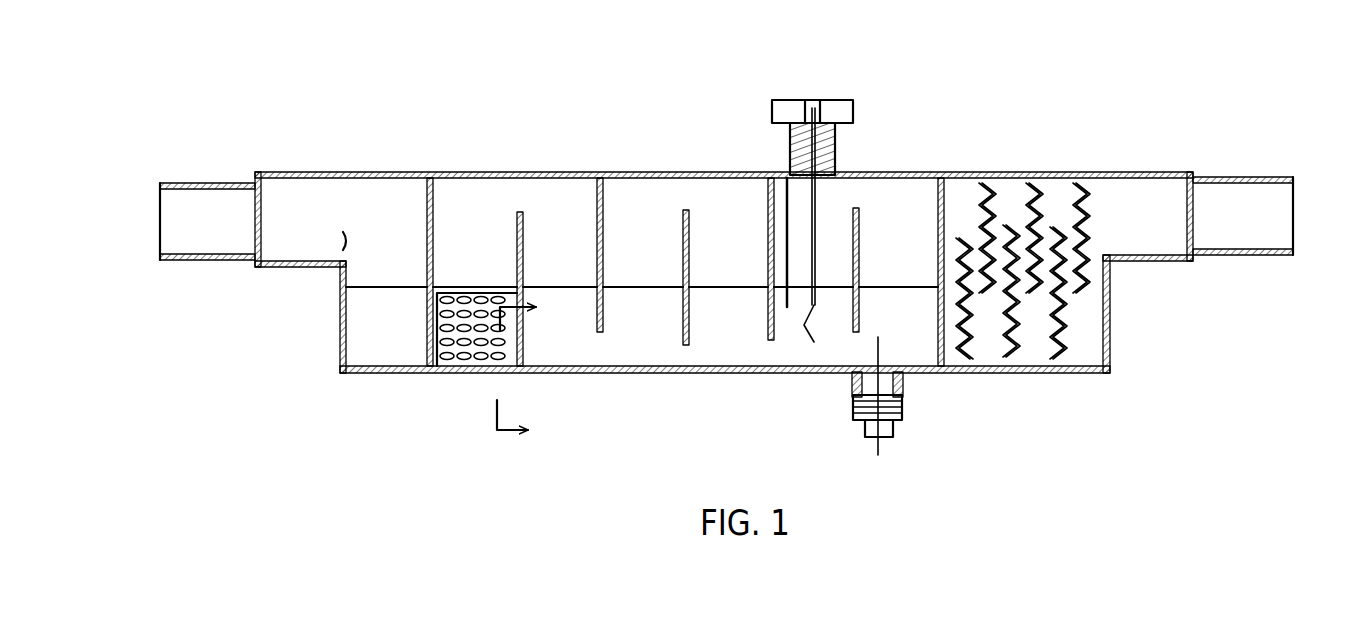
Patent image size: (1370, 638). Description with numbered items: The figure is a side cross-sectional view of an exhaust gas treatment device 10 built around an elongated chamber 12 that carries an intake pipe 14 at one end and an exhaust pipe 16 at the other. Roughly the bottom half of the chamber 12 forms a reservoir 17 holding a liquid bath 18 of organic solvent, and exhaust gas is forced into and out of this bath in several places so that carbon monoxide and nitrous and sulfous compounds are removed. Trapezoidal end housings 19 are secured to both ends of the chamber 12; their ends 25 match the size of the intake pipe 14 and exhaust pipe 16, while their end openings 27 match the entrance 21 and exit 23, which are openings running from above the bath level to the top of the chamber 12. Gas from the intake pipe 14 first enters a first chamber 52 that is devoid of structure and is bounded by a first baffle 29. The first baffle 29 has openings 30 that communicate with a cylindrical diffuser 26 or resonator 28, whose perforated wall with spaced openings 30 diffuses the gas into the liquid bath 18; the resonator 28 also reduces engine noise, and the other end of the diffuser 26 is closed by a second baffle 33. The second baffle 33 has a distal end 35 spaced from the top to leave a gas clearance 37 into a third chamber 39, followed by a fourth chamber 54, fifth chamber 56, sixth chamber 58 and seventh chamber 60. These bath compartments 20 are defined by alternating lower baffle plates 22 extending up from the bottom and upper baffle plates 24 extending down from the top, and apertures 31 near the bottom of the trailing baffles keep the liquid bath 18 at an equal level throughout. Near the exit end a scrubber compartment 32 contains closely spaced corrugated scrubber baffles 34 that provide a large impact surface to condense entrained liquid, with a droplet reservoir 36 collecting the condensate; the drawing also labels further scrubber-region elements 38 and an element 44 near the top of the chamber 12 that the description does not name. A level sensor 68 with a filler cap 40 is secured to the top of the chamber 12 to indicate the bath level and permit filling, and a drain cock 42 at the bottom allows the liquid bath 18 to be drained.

The device 10 is at (930, 133).
The chamber 12 is at (878, 177).
The intake pipe 14 is at (200, 175).
The exhaust pipe 16 is at (1255, 177).
The reservoir 17 is at (613, 377).
The liquid bath 18 is at (603, 355).
The end housings 19 is at (295, 173).
The bath compartments 20 is at (397, 276).
The entrance 21 is at (312, 173).
The lower baffle plates 22 is at (768, 343).
The exit 23 is at (1110, 223).
The upper baffle plates 24 is at (607, 230).
The ends 25 is at (250, 235).
The diffusers 26 is at (293, 242).
The end openings 27 is at (340, 262).
The resonator 28 is at (463, 367).
The first baffle 29 is at (373, 195).
The openings 30 is at (430, 330).
The aperture 31 is at (900, 368).
The scrubber compartment 32 is at (957, 203).
The second baffle 33 is at (530, 218).
The scrubber baffles 34 is at (1005, 198).
The distal end 35 is at (520, 212).
The droplet reservoir 36 is at (985, 345).
The gas clearance 37 is at (520, 195).
The corrugated element 38 is at (1012, 362).
The third chamber 39 is at (567, 263).
The filler cap 40 is at (785, 100).
The drain cock 42 is at (900, 427).
The rod 44 is at (767, 217).
The first chamber 52 is at (350, 177).
The fourth chamber 54 is at (654, 344).
The fifth chamber 56 is at (740, 344).
The sixth chamber 58 is at (833, 237).
The seventh chamber 60 is at (878, 358).
The level sensor 68 is at (672, 323).